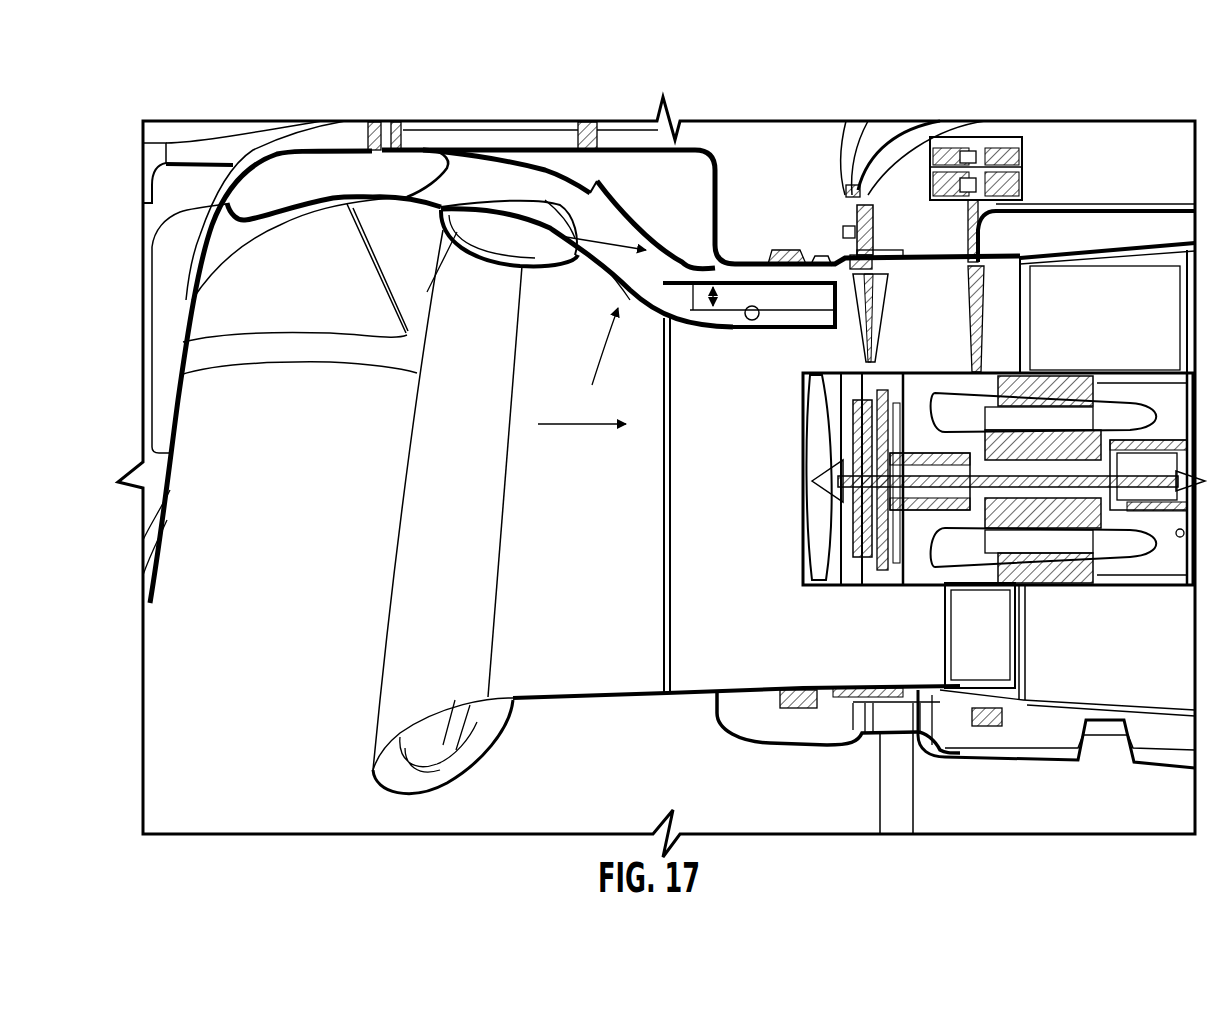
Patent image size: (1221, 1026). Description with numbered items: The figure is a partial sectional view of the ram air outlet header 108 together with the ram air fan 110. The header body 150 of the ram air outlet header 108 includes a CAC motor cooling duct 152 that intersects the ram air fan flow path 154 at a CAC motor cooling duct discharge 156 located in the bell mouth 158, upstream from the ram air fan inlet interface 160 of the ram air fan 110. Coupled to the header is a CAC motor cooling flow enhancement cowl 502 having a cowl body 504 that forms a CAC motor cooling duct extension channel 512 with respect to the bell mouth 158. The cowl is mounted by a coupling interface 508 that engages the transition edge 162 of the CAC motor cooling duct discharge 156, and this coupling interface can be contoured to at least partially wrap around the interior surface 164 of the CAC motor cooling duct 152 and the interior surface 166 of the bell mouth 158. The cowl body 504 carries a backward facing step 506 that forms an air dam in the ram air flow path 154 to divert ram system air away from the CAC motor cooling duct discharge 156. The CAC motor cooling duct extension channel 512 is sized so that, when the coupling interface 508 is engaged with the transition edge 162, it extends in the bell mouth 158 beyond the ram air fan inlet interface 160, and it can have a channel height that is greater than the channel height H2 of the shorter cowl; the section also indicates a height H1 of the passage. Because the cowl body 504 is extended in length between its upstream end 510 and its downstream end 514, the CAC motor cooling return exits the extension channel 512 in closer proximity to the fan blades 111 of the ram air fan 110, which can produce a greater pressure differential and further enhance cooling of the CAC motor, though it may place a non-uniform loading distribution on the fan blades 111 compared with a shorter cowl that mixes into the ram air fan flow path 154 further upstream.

The ram air outlet header 108 is at (205, 137).
The header body 150 is at (283, 137).
The CAC motor cooling duct 152 is at (473, 163).
The interior surface 164 is at (558, 230).
The CAC motor cooling duct discharge 156 is at (700, 248).
The channel height H2 is at (712, 283).
The ram air fan 110 is at (953, 218).
The ram air fan inlet interface 160 is at (797, 262).
The passage height H1 is at (625, 250).
The CAC motor cooling duct extension channel 512 is at (729, 300).
The fan blades 111 is at (870, 307).
The interior surface 166 is at (477, 253).
The transition edge 162 is at (578, 255).
The coupling interface 508 is at (610, 273).
The backward facing step 506 is at (647, 300).
The downstream end 514 is at (838, 289).
The upstream end 510 is at (595, 364).
The cowl body 504 is at (693, 322).
The CAC motor cooling flow enhancement cowl 502 is at (757, 322).
The ram air fan flow path 154 is at (566, 428).
The bell mouth 158 is at (428, 503).